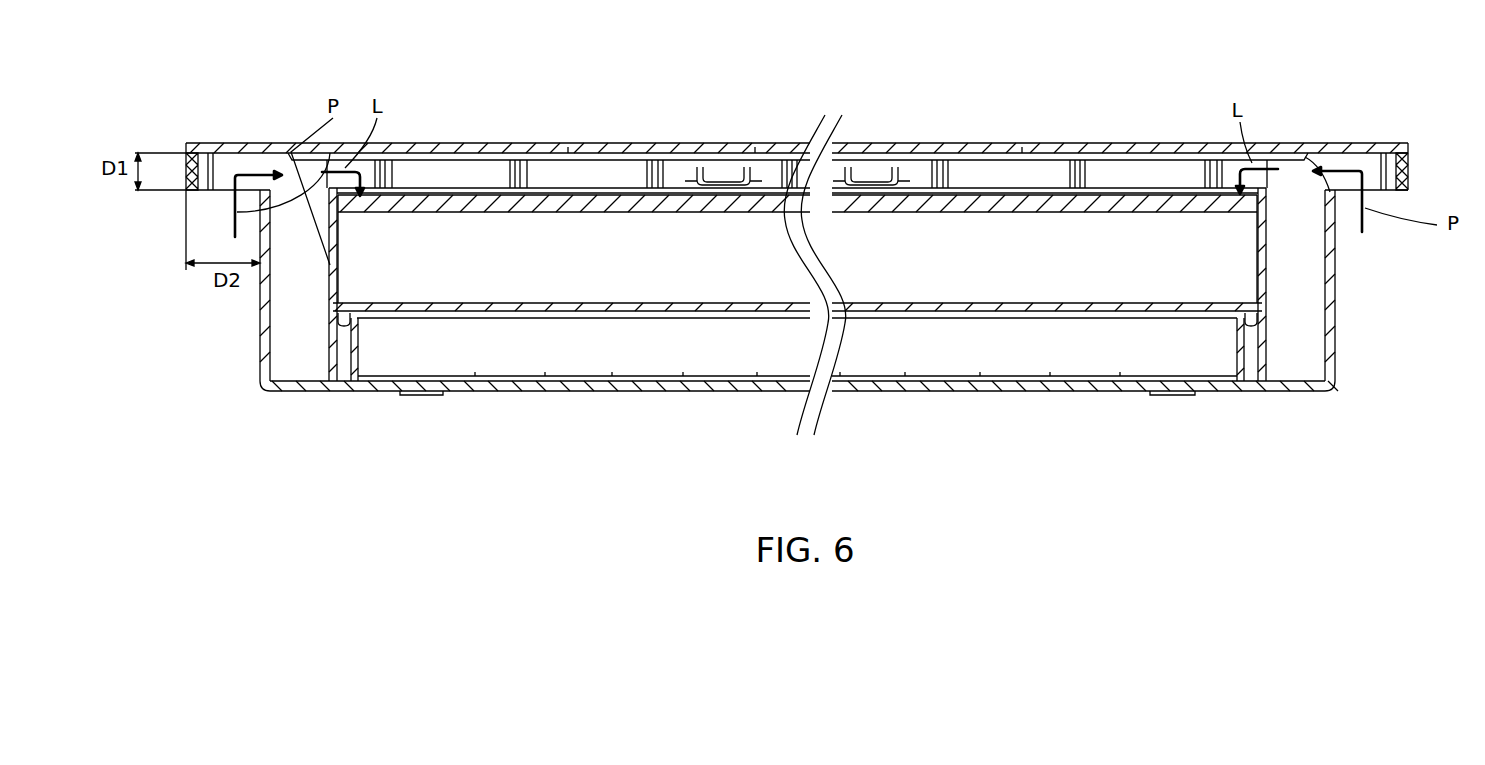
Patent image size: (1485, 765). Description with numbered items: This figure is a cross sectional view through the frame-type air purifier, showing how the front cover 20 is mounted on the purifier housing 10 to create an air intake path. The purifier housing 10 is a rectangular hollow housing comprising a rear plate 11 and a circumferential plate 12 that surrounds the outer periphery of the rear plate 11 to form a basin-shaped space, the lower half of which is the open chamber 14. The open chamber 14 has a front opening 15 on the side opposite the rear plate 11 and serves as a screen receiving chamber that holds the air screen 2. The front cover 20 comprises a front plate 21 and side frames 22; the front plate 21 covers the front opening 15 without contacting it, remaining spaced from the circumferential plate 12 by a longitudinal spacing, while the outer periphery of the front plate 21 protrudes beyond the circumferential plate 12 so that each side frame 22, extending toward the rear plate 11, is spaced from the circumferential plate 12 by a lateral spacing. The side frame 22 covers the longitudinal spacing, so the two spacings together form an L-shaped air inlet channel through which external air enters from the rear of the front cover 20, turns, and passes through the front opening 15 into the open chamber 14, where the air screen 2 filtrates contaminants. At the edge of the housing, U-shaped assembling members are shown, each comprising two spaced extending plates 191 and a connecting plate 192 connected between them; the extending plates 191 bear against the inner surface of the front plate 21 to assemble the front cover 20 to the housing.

The air screen 2 is at (1235, 242).
The purifier housing 10 is at (1335, 390).
The rear plate 11 is at (546, 392).
The circumferential plate 12 is at (260, 343).
The open chamber 14 is at (442, 358).
The front opening 15 is at (1263, 283).
The front cover 20 is at (424, 143).
The front plate 21 is at (518, 148).
The side frame 22 is at (201, 147).
The extending plate 191 is at (248, 162).
The connecting plate 192 is at (199, 173).